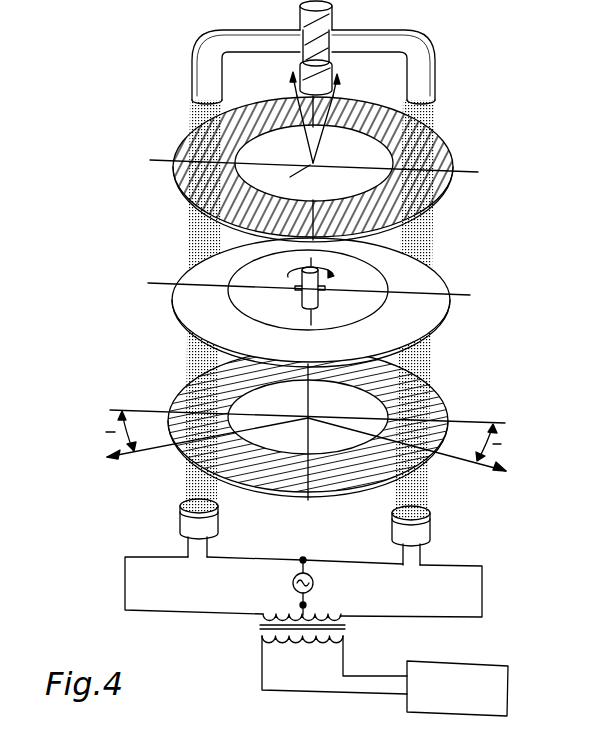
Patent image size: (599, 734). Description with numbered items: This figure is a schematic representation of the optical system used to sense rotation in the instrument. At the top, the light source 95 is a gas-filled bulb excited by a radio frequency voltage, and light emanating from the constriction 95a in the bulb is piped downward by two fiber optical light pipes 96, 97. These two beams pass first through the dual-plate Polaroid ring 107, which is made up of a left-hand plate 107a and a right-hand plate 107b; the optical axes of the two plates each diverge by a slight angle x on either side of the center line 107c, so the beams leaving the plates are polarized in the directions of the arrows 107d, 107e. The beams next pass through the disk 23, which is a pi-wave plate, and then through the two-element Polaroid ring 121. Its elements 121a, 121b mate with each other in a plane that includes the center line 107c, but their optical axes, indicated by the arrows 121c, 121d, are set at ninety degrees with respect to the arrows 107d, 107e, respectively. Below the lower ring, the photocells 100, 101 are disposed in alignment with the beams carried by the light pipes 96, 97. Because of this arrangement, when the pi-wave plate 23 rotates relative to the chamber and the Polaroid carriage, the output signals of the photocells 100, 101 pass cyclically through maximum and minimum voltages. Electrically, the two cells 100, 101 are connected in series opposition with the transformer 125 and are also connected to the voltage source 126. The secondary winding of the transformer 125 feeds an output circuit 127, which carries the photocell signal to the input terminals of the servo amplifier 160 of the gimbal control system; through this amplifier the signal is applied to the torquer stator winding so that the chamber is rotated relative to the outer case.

The disk 23 is at (433, 312).
The light source 95 is at (320, 47).
The constriction 95a is at (323, 52).
The fiber optical light pipe 96 is at (212, 44).
The fiber optical light pipe 97 is at (422, 54).
The photocell 100 is at (178, 524).
The photocell 101 is at (432, 532).
The dual-plate Polaroid ring 107 is at (315, 169).
The left-hand plate 107a is at (202, 150).
The right-hand plate 107b is at (447, 162).
The center line 107c is at (316, 183).
The arrow 107d is at (312, 165).
The arrow 107e is at (318, 162).
The two-element Polaroid ring 121 is at (303, 425).
The Polaroid element 121a is at (178, 397).
The Polaroid element 121b is at (438, 407).
The arrow 121c is at (258, 428).
The arrow 121d is at (354, 428).
The transformer 125 is at (343, 614).
The voltage source 126 is at (293, 583).
The output circuit 127 is at (395, 660).
The servo amplifier 160 is at (457, 688).